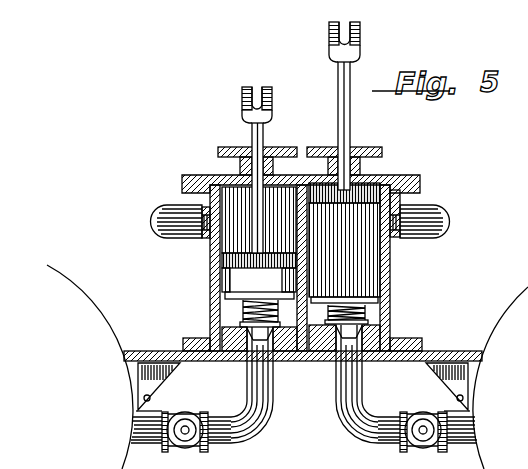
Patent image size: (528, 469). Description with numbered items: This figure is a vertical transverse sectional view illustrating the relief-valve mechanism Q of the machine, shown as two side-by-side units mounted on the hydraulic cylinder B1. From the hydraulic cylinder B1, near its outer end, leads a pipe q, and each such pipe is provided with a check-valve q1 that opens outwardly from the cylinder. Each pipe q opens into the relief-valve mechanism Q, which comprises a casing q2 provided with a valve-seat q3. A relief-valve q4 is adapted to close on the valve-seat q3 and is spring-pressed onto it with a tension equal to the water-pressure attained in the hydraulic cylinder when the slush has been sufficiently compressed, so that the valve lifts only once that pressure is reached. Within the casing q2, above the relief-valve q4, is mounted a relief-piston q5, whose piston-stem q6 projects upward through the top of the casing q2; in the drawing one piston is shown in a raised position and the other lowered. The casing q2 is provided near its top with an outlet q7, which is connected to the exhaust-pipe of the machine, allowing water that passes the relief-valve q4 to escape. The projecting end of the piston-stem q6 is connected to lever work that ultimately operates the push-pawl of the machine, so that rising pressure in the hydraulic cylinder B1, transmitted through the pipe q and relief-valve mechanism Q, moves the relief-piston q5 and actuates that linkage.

The hydraulic cylinder B1 is at (115, 335).
The pipe q is at (340, 428).
The check-valve q1 is at (185, 420).
The relief-valve mechanism Q is at (220, 277).
The relief-piston q5 is at (402, 165).
The relief-valve q4 is at (438, 290).
The casing q2 is at (406, 316).
The valve-seat q3 is at (433, 327).
The piston-stem q6 is at (372, 126).
The outlet q7 is at (157, 226).